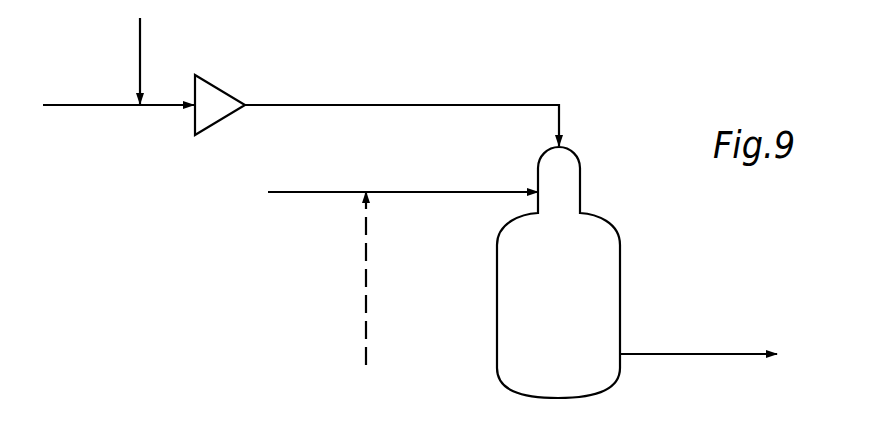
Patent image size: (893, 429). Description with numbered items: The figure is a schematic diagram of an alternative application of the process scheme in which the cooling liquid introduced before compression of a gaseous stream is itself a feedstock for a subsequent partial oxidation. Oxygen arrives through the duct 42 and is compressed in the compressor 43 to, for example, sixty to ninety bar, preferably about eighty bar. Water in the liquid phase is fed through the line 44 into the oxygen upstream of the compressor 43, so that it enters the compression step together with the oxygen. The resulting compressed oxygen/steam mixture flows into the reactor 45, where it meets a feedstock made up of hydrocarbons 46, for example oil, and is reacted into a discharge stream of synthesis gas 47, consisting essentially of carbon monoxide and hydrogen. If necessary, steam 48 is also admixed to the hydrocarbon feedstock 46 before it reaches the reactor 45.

The duct 42 is at (92, 104).
The compressor 43 is at (218, 87).
The line 44 is at (140, 31).
The reactor 45 is at (612, 268).
The feedstock of hydrocarbons 46 is at (330, 190).
The synthesis gas 47 is at (710, 352).
The steam 48 is at (367, 297).